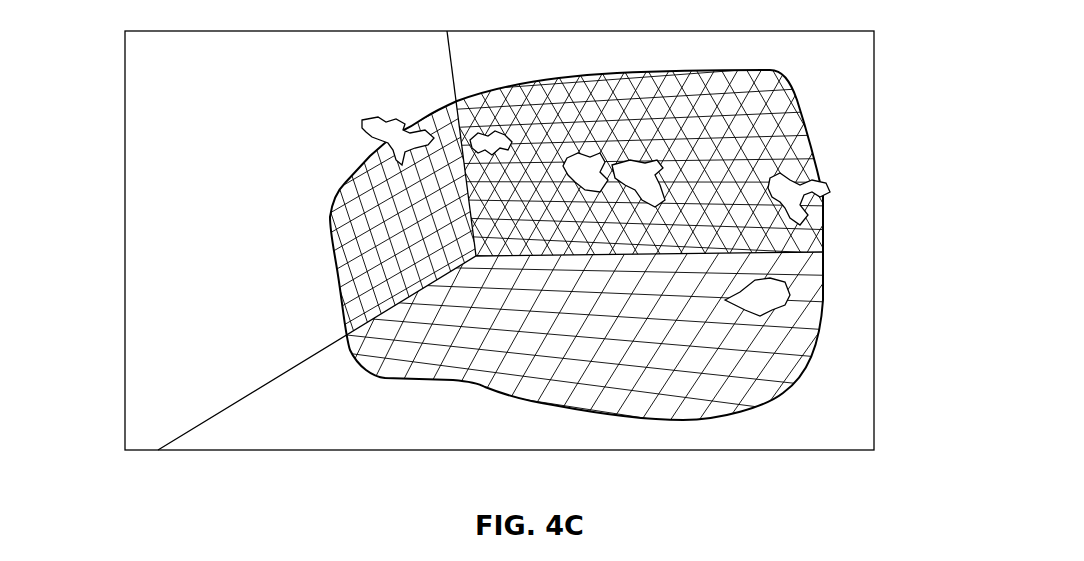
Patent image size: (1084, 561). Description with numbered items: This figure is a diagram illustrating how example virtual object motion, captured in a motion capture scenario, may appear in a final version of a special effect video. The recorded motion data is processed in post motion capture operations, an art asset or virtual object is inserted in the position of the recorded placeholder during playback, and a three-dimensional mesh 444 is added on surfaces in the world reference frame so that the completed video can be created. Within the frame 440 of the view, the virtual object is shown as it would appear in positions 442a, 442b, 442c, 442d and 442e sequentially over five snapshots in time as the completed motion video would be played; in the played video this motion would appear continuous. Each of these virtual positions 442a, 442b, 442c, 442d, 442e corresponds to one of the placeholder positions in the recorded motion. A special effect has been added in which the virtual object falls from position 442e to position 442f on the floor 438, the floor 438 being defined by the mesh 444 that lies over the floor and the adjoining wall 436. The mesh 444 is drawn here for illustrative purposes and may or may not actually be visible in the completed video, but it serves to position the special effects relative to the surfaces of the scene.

The wall 436 is at (207, 152).
The floor 438 is at (330, 428).
The frame / field of view 440 is at (845, 65).
The virtual object position 442a is at (403, 120).
The virtual object position 442b is at (500, 132).
The virtual object position 442c is at (572, 155).
The virtual object position 442d is at (643, 168).
The virtual object position 442e is at (795, 175).
The virtual object position 442f is at (787, 318).
The mesh 444 is at (807, 280).